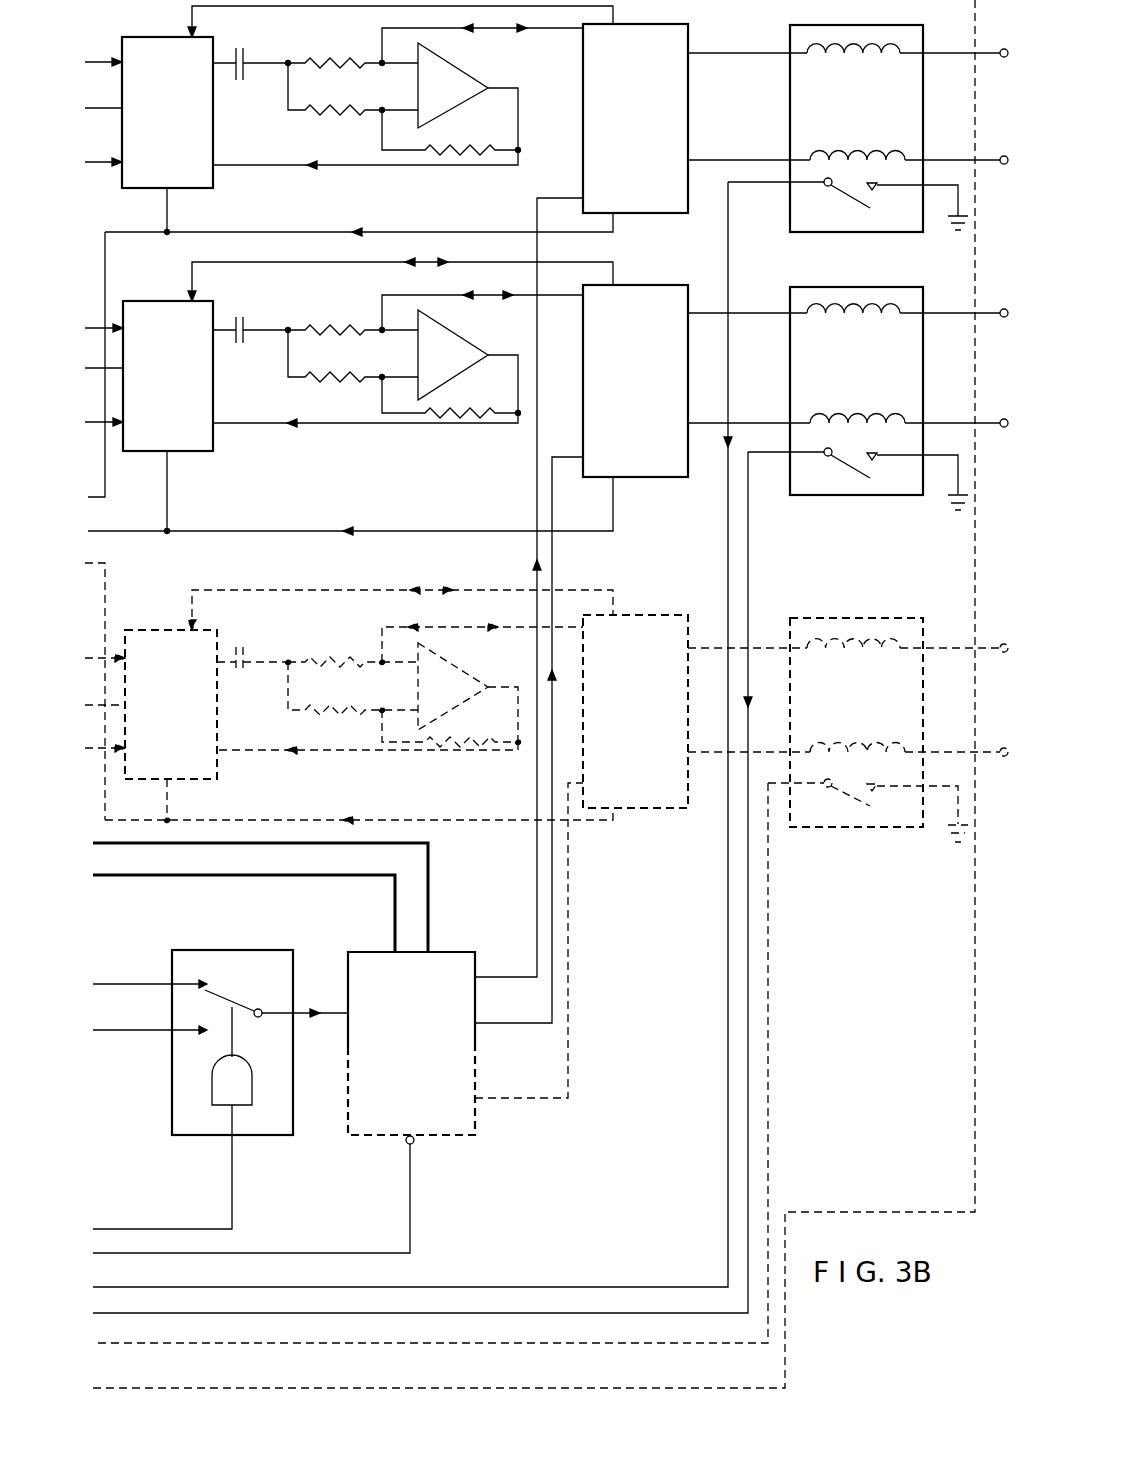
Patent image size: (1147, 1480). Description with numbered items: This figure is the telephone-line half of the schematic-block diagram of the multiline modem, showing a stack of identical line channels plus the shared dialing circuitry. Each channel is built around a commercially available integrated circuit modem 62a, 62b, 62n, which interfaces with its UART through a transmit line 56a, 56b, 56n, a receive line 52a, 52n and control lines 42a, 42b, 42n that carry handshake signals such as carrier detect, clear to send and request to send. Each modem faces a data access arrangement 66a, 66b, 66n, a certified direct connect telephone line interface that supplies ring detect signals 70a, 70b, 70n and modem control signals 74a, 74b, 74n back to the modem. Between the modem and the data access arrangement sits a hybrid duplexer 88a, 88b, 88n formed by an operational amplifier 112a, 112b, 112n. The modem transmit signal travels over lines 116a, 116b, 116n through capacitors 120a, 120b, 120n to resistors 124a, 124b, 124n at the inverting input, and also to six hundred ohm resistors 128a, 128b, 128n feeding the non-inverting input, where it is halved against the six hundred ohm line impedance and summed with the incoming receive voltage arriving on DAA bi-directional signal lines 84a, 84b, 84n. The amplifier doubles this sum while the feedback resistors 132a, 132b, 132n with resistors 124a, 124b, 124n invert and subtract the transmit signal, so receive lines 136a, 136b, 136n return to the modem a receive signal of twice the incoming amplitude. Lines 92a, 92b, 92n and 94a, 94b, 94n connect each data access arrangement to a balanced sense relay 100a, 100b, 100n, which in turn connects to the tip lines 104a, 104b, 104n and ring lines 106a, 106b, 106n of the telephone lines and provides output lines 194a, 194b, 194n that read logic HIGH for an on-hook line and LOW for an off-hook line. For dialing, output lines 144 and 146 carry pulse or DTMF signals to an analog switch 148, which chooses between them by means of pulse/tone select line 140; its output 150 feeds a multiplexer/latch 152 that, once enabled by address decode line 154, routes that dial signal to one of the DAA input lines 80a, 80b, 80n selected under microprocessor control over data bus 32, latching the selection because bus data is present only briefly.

The data bus 32 is at (318, 881).
The control line 42a is at (103, 150).
The control line 42b is at (112, 426).
The control line 42n is at (114, 754).
The receive line 52a is at (100, 110).
The receive line 52n is at (105, 691).
The transmit line 56a is at (103, 51).
The transmit line 56b is at (109, 324).
The transmit line 56n is at (103, 648).
The modem 62a is at (165, 35).
The modem 62b is at (180, 298).
The modem 62n is at (178, 630).
The data access arrangement 66a is at (712, 20).
The data access arrangement 66b is at (690, 270).
The data access arrangement 66n is at (656, 614).
The ring detect signal 70a is at (418, 222).
The ring detect signal 70b is at (426, 526).
The ring detect signal 70n is at (378, 822).
The modem control signal 74a is at (300, 14).
The modem control signal 74b is at (460, 262).
The modem control signal 74n is at (328, 590).
The input line 80a is at (508, 974).
The input line 80b is at (524, 1024).
The input line 80n is at (542, 1096).
The DAA bi-directional signal line 84a is at (495, 34).
The DAA bi-directional signal line 84b is at (418, 295).
The DAA bi-directional signal line 84n is at (438, 626).
The hybrid duplexer 88a is at (312, 184).
The hybrid duplexer 88b is at (265, 453).
The hybrid duplexer 88n is at (270, 764).
The DAA tip line 92a is at (758, 52).
The DAA tip line 92b is at (740, 312).
The DAA tip line 92n is at (766, 644).
The DAA ring line 94a is at (768, 146).
The DAA ring line 94b is at (752, 412).
The DAA ring line 94n is at (766, 750).
The balanced sense relay 100a is at (866, 24).
The balanced sense relay 100b is at (838, 286).
The balanced sense relay 100n is at (868, 617).
The tip line 104a is at (948, 54).
The tip line 104b is at (936, 310).
The tip line 104n is at (946, 645).
The ring line 106a is at (948, 152).
The ring line 106b is at (946, 416).
The ring line 106n is at (946, 751).
The operational amplifier 112a is at (470, 62).
The operational amplifier 112b is at (444, 328).
The operational amplifier 112n is at (478, 650).
The transmit signal line 116a is at (230, 80).
The transmit signal line 116b is at (228, 336).
The transmit signal line 116n is at (230, 672).
The capacitor 120a is at (248, 76).
The capacitor 120b is at (242, 314).
The capacitor 120n is at (248, 646).
The resistor 124a is at (337, 116).
The resistor 124b is at (322, 386).
The resistor 124n is at (342, 728).
The 600 ohm resistor 128a is at (303, 40).
The 600 ohm resistor 128b is at (310, 298).
The 600 ohm resistor 128n is at (321, 646).
The resistor 132a is at (488, 137).
The resistor 132b is at (447, 408).
The resistor 132n is at (500, 727).
The receive signal line 136a is at (332, 171).
The receive signal line 136b is at (312, 428).
The receive signal line 136n is at (376, 756).
The pulse/tone select line 140 is at (180, 1226).
The output line 144 is at (138, 974).
The output line 146 is at (144, 1032).
The analog switch 148 is at (288, 1135).
The output of analog switch 150 is at (320, 1007).
The multiplexer/latch 152 is at (448, 952).
The address decode line 154 is at (314, 1250).
The output line 194a is at (732, 282).
The output line 194b is at (404, 1310).
The output line 194n is at (456, 1326).